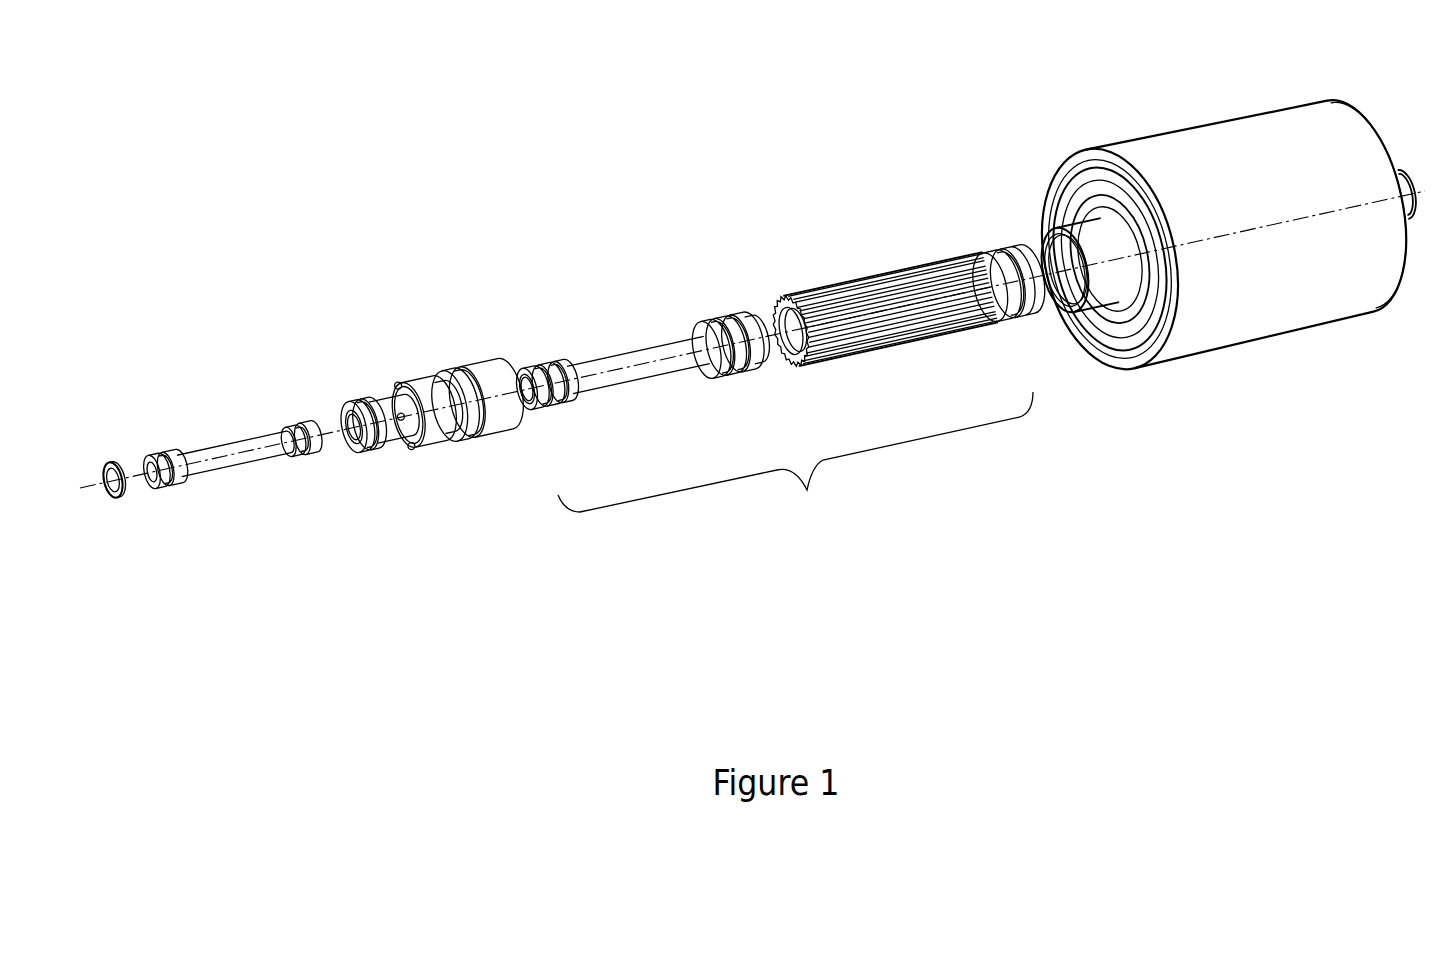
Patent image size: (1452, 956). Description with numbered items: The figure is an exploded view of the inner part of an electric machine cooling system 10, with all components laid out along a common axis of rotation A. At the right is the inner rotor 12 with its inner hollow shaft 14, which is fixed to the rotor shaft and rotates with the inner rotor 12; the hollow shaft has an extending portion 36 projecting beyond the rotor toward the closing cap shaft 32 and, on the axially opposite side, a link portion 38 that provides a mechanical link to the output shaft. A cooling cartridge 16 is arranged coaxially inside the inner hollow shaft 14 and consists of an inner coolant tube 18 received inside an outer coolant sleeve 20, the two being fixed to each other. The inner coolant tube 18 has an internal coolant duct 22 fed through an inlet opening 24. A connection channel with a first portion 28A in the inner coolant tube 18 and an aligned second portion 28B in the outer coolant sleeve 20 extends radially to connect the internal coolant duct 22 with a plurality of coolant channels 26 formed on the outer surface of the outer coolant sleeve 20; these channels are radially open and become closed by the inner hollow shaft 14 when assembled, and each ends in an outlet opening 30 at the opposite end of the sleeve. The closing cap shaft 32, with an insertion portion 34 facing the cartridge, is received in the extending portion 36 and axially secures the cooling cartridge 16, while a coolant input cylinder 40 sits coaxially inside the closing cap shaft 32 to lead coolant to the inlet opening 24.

The electric machine cooling system 10 is at (537, 203).
The inner rotor 12 is at (1228, 265).
The inner hollow shaft 14 is at (1080, 315).
The cooling cartridge 16 is at (795, 460).
The inner coolant tube 18 is at (669, 356).
The outer coolant sleeve 20 is at (879, 298).
The internal coolant duct 22 is at (527, 407).
The inlet opening 24 is at (432, 419).
The coolant channels 26 is at (890, 309).
The first portion of connection channel 28A is at (731, 344).
The second portion of connection channel 28B is at (1009, 282).
The outlet opening 30 is at (791, 331).
The closing cap shaft 32 is at (424, 411).
The insertion portion 34 is at (517, 373).
The extending portion 36 is at (1075, 337).
The link portion 38 is at (1409, 193).
The coolant input cylinder 40 is at (233, 443).
The axis of rotation A is at (1035, 265).